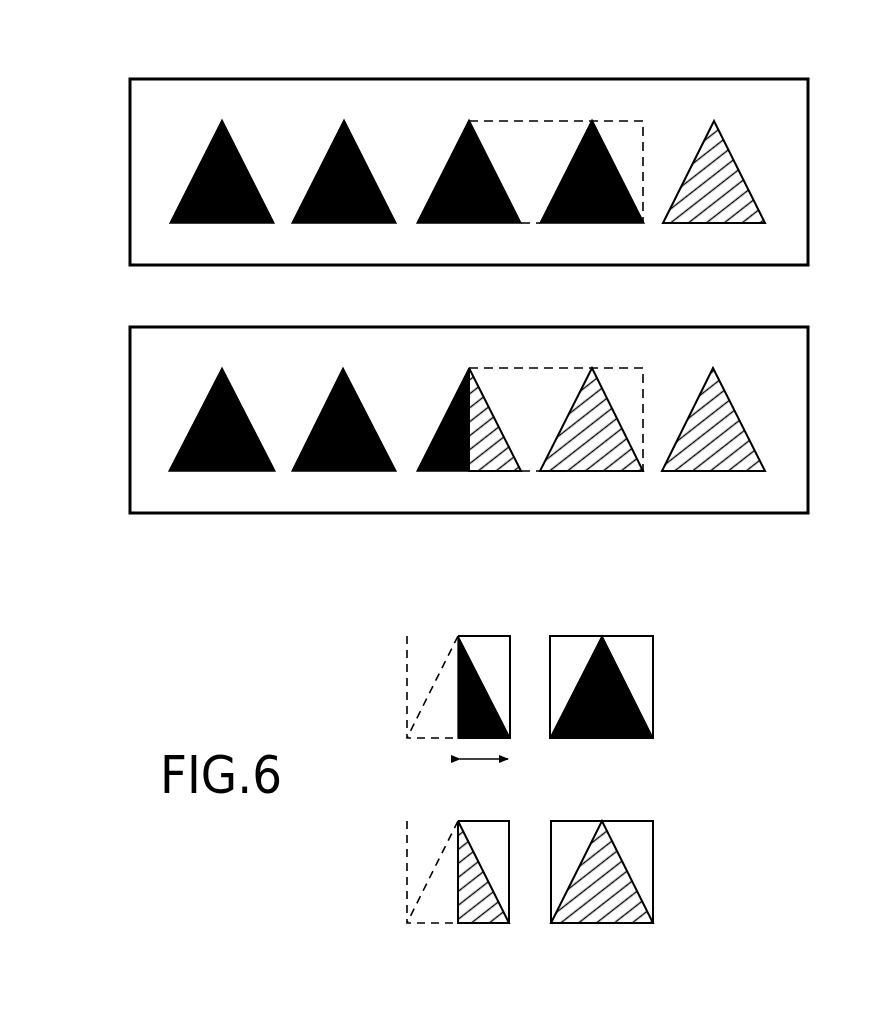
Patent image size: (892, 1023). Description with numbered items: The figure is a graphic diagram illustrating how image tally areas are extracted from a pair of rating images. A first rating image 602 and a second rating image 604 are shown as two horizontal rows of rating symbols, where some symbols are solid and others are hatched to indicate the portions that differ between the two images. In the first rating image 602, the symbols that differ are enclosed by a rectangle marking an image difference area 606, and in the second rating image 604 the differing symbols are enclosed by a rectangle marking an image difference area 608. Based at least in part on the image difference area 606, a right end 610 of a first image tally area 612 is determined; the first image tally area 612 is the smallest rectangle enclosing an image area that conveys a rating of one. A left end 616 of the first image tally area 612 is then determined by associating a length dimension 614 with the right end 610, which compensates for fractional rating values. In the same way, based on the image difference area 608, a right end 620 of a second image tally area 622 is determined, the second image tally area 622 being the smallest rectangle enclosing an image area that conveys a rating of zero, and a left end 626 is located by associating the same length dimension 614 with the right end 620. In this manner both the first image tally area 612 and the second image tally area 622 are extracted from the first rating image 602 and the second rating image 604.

The first rating image 602 is at (130, 175).
The second rating image 604 is at (130, 422).
The image difference area 606 is at (644, 110).
The image difference area 608 is at (469, 482).
The right end 610 is at (510, 670).
The first image tally area 612 is at (484, 636).
The length dimension 614 is at (483, 764).
The left end 616 is at (407, 688).
The right end 620 is at (510, 856).
The second image tally area 622 is at (483, 923).
The left end 626 is at (407, 873).